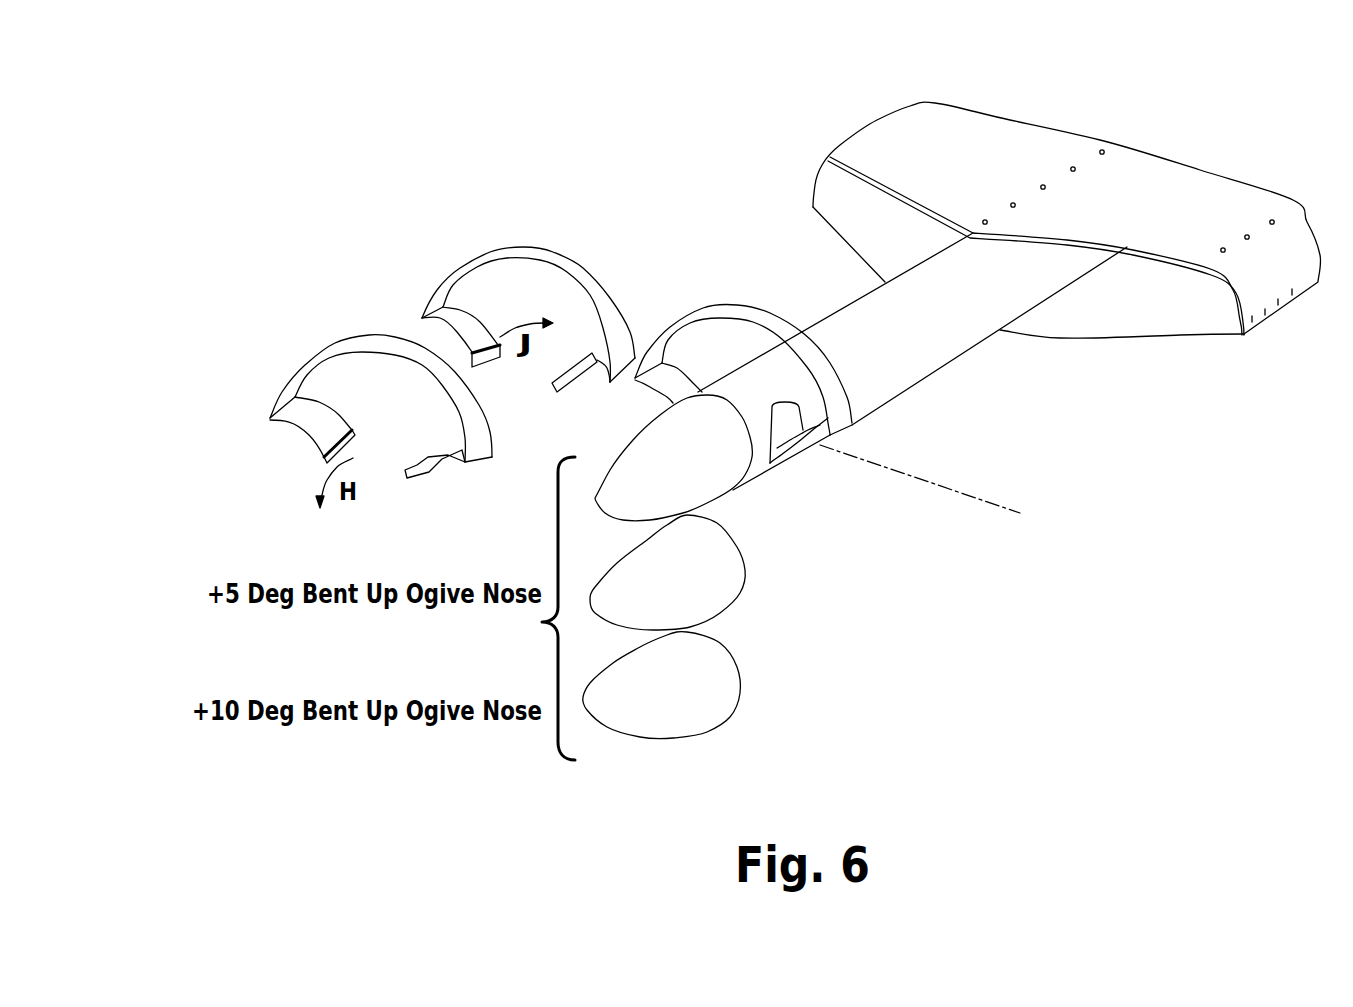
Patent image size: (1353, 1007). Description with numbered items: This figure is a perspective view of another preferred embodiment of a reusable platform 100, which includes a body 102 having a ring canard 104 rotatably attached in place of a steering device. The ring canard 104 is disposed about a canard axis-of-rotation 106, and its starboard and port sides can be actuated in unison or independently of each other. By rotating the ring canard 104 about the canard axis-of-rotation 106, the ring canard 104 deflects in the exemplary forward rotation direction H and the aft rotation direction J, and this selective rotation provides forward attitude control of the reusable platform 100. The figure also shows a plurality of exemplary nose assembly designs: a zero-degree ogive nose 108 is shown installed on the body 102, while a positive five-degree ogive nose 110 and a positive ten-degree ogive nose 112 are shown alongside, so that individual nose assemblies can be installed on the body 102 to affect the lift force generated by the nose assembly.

The reusable platform 100 is at (604, 206).
The body 102 is at (935, 348).
The ring canard 104 is at (850, 427).
The canard axis-of-rotation 106 is at (930, 480).
The 0° ogive nose 108 is at (712, 475).
The positive 5° ogive nose 110 is at (717, 583).
The positive 10° ogive nose 112 is at (728, 680).